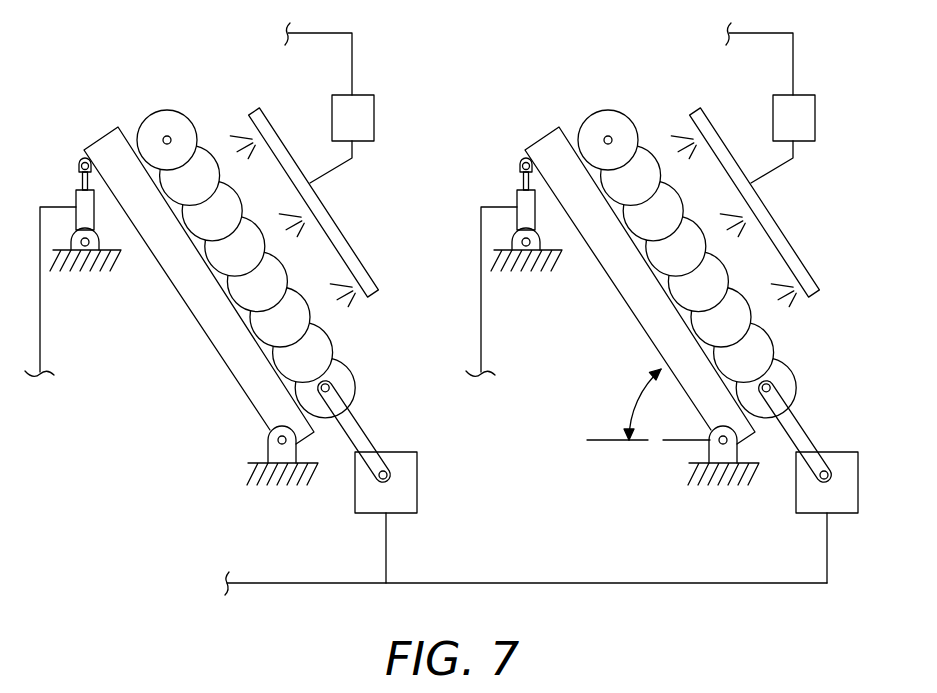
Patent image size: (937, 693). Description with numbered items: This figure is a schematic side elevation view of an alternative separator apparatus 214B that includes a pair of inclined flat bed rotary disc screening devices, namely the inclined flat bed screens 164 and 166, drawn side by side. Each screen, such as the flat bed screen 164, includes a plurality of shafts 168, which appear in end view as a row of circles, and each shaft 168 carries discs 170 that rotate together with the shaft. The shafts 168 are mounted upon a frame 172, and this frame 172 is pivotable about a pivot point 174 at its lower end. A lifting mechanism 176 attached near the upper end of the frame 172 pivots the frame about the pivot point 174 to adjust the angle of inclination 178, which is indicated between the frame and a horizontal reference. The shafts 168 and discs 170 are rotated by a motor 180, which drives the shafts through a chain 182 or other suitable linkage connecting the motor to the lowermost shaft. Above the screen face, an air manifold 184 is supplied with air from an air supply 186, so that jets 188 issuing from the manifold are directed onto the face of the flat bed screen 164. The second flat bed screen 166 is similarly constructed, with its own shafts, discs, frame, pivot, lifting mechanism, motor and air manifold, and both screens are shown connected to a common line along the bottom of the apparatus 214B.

The inclined flat bed screen 164 is at (562, 358).
The inclined flat bed screen 166 is at (172, 358).
The shaft 168 is at (608, 136).
The disc 170 is at (623, 127).
The frame 172 is at (642, 318).
The pivot point 174 is at (712, 455).
The lifting mechanism 176 is at (528, 213).
The angle of inclination 178 is at (633, 412).
The motor 180 is at (803, 495).
The chain 182 is at (799, 421).
The air manifold 184 is at (753, 192).
The air supply 186 is at (798, 103).
The jets 188 is at (742, 221).
The alternative separator apparatus 214B is at (157, 560).